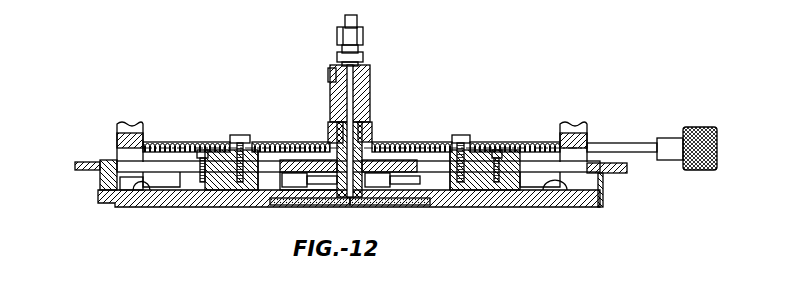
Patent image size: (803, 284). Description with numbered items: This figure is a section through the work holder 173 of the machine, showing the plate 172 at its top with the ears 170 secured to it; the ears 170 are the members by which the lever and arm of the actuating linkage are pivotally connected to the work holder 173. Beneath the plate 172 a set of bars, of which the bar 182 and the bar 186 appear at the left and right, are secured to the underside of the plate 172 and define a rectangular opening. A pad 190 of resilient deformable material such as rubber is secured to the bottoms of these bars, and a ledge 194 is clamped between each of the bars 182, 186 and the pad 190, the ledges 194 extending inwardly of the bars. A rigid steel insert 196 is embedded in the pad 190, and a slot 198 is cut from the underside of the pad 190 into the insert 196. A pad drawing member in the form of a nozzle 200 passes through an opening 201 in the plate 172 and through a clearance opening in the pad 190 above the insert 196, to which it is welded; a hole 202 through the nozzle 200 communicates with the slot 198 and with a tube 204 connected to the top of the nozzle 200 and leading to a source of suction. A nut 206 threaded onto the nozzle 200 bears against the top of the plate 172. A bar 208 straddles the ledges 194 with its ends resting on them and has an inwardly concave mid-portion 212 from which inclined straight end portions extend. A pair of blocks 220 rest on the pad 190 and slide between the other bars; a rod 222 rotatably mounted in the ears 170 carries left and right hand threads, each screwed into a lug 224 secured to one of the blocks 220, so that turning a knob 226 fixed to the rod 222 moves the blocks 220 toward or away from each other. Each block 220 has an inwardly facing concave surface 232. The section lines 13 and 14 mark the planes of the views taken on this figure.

The ears 170 is at (125, 127).
The plate 172 is at (100, 162).
The work holder 173 is at (438, 88).
The bar 182 is at (97, 177).
The bar 186 is at (603, 186).
The pad 190 is at (520, 205).
The ledge 194 is at (143, 191).
The insert 196 is at (270, 208).
The slot 198 is at (388, 208).
The nozzle 200 is at (372, 162).
The opening 201 is at (335, 153).
The hole 202 is at (337, 118).
The tube 204 is at (357, 22).
The nut 206 is at (369, 132).
The bar 208 is at (160, 187).
The concave mid-portion 212 is at (312, 172).
The blocks 220 is at (203, 200).
The rod 222 is at (610, 144).
The lug 224 is at (218, 160).
The knob 226 is at (697, 133).
The concave surface 232 is at (267, 203).
The section line 13— 13 is at (94, 207).
The section line 14— 14 is at (100, 171).